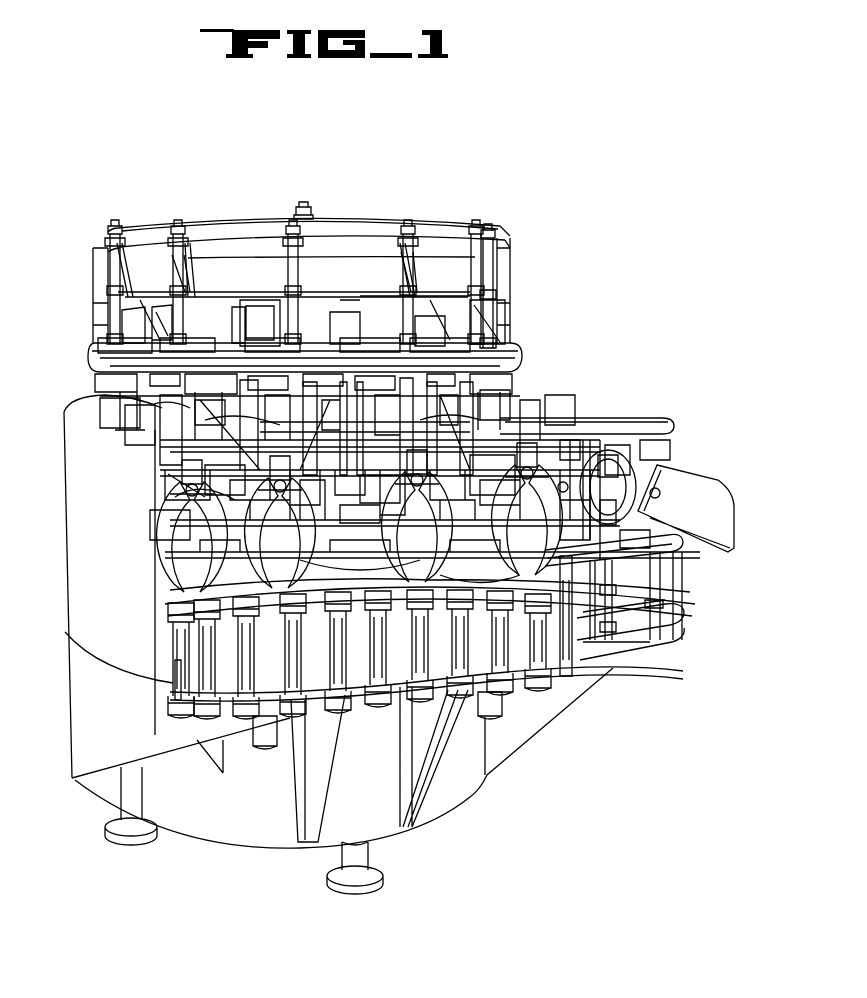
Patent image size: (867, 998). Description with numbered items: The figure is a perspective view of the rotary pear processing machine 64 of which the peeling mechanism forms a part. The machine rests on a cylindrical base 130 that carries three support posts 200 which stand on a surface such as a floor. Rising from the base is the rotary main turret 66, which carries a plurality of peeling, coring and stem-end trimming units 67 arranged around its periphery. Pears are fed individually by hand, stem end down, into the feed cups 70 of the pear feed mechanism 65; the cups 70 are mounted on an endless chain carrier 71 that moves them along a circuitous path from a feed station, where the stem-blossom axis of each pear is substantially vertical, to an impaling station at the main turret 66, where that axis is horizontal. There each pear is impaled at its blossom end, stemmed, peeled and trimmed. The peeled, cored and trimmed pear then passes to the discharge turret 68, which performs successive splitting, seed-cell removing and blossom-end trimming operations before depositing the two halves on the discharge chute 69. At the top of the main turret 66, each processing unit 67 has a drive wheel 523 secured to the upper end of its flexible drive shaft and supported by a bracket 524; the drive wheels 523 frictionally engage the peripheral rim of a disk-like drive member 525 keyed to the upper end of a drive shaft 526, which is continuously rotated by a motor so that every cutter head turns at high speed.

The rotary pear processing machine 64 is at (576, 266).
The pear feed mechanism 65 is at (156, 547).
The rotary main turret 66 is at (530, 352).
The peeling, coring and stem-end trimming unit 67 is at (360, 387).
The discharge turret 68 is at (644, 415).
The discharge chute 69 is at (687, 494).
The feed cup 70 is at (166, 494).
The endless chain carrier 71 is at (168, 707).
The cylindrical base 130 is at (256, 820).
The support post 200 is at (124, 812).
The drive wheel 523 is at (180, 232).
The bracket 524 is at (278, 279).
The disk-like drive member 525 is at (229, 230).
The drive shaft 526 is at (312, 210).